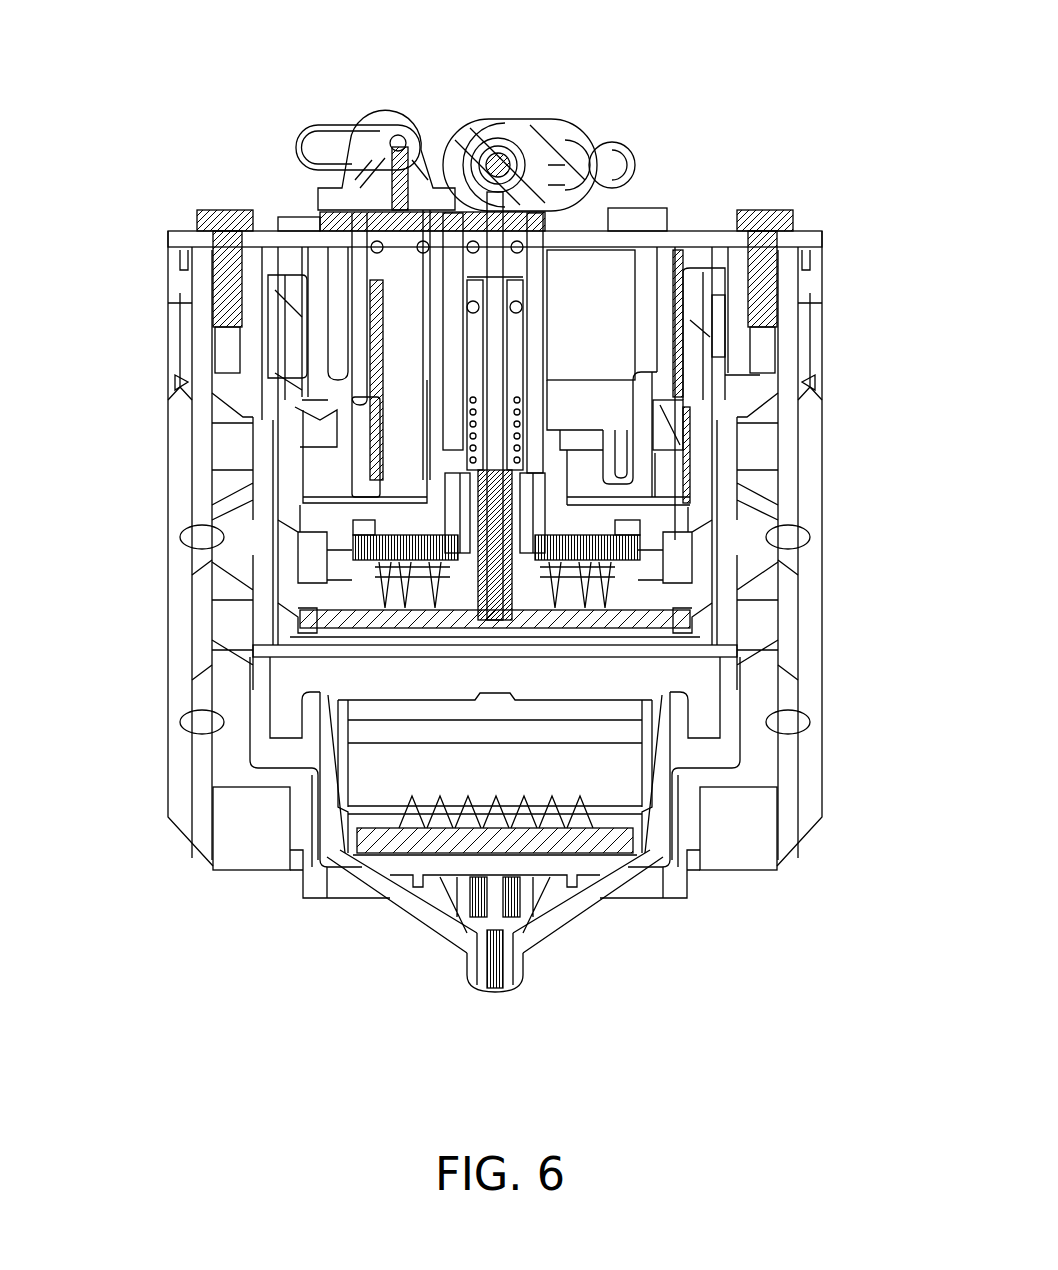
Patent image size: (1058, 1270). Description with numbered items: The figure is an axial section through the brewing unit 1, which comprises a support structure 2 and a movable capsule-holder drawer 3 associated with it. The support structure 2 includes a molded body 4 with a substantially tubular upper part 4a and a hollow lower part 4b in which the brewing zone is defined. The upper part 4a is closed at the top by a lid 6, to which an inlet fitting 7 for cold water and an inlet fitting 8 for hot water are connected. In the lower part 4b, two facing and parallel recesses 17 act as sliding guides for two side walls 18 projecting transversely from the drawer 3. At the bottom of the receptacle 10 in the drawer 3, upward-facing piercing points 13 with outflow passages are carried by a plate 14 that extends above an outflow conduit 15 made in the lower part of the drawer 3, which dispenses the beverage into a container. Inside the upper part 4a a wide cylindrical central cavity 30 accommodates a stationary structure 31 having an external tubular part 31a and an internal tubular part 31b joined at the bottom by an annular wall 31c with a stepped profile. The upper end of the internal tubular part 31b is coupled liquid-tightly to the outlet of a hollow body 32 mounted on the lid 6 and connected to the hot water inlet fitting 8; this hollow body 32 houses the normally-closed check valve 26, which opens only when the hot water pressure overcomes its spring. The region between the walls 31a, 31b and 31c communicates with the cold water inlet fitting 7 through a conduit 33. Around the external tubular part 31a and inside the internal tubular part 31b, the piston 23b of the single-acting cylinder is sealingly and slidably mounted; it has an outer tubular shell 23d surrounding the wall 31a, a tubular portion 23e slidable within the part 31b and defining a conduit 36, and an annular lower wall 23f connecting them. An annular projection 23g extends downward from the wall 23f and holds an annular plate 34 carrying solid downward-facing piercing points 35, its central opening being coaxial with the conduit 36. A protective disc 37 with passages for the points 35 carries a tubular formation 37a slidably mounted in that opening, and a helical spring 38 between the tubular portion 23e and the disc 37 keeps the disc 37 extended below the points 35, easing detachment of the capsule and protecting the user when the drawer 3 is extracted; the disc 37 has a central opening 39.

The brewing unit 1 is at (216, 176).
The support structure 2 is at (170, 655).
The capsule-holder drawer 3 is at (420, 905).
The molded body 4 is at (830, 432).
The upper part 4a is at (818, 305).
The lower part 4b is at (820, 720).
The lid 6 is at (812, 232).
The cold water inlet fitting 7 is at (305, 135).
The hot water inlet fitting 8 is at (632, 152).
The receptacle 10 is at (510, 780).
The piercing points 13 is at (330, 850).
The plate 14 is at (575, 890).
The outflow conduit 15 is at (485, 975).
The recesses 17 is at (222, 810).
The side walls 18 is at (262, 700).
The piston 23b is at (260, 462).
The outer tubular shell 23d is at (250, 448).
The tubular portion 23e is at (475, 350).
The annular lower wall 23f is at (455, 440).
The annular projection 23g is at (295, 515).
The check valve 26 is at (495, 138).
The central cavity 30 is at (640, 255).
The stationary structure 31 is at (325, 330).
The external tubular part 31a is at (345, 335).
The internal tubular part 31b is at (520, 350).
The annular wall 31c is at (560, 430).
The hollow body 32 is at (555, 118).
The conduit 33 is at (400, 130).
The annular plate 34 is at (320, 590).
The piercing points 35 is at (330, 610).
The conduit 36 is at (590, 160).
The protective disc 37 is at (585, 625).
The tubular formation 37a is at (603, 440).
The helical spring 38 is at (462, 615).
The central opening 39 is at (505, 620).